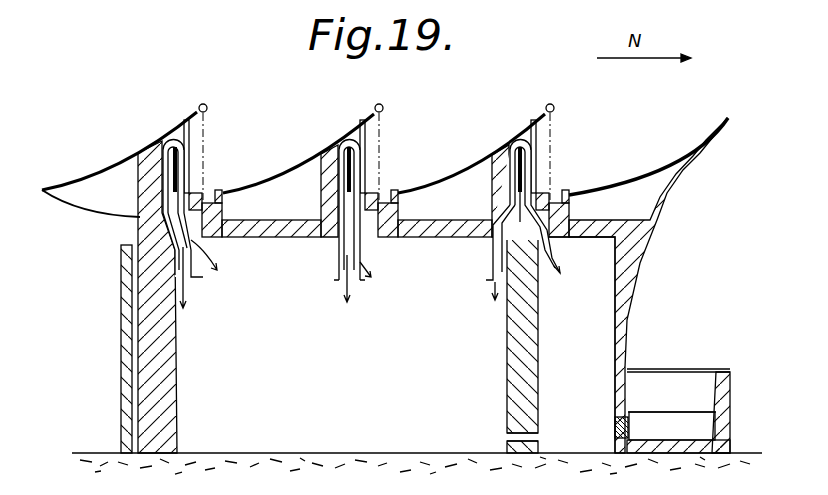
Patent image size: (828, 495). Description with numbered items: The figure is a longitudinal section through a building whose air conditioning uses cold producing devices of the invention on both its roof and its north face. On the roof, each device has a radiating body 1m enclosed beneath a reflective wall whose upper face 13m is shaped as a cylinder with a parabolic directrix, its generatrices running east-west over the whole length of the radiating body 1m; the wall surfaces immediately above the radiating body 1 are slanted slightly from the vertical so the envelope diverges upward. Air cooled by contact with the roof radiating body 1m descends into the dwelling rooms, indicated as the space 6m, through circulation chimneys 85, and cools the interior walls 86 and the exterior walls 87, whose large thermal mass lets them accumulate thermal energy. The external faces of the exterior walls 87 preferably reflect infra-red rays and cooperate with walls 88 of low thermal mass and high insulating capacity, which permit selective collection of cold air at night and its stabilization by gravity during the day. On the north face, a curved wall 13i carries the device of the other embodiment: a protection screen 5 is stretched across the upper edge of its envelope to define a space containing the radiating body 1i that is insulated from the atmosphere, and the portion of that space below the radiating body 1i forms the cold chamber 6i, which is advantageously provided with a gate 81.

The radiating body 1 is at (353, 151).
The radiating body 1m is at (174, 153).
The protection screen 5 is at (189, 172).
The upper face 13m is at (303, 170).
The curved wall 13i is at (651, 250).
The circulation chimneys 85 is at (198, 280).
The interior walls 86 is at (507, 384).
The exterior walls 87 is at (168, 365).
The walls 88 is at (121, 363).
The room 6m is at (343, 369).
The gate 81 is at (616, 428).
The radiating body 1i is at (685, 411).
The cold chamber 6i is at (672, 427).